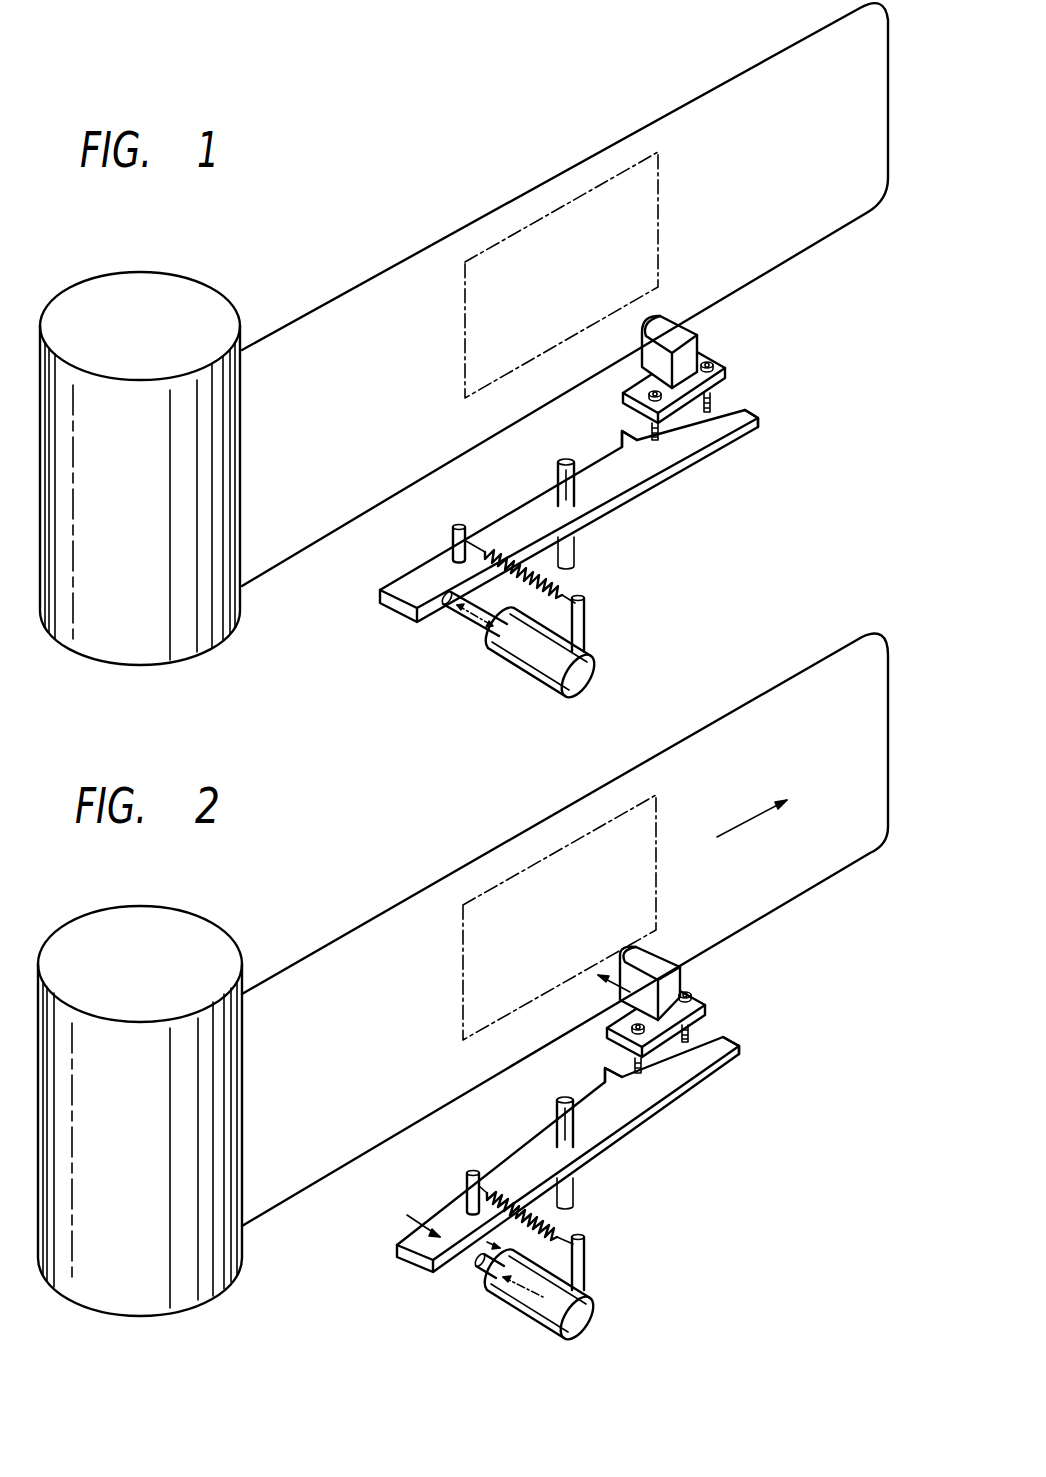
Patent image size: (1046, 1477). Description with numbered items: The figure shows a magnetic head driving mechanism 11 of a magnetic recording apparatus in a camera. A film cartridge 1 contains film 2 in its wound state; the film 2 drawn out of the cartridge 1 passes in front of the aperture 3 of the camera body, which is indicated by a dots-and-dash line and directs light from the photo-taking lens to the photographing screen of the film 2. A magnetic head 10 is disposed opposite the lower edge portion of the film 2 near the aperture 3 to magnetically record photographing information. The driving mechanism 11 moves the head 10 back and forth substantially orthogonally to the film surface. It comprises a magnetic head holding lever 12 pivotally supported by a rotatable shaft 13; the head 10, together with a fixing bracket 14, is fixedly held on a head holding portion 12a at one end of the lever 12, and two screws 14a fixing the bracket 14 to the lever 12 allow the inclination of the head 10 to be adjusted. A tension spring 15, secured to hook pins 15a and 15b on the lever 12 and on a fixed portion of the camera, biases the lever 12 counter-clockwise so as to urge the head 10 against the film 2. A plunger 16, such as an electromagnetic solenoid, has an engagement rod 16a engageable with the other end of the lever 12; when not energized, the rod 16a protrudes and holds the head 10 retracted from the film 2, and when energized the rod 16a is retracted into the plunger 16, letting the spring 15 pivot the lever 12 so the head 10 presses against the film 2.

In FIG. 1, the film cartridge 1 is at (152, 283).
In FIG. 2, the film cartridge 1 is at (160, 927).
In FIG. 1, the film 2 is at (437, 267).
In FIG. 2, the film 2 is at (372, 937).
In FIG. 1, the aperture 3 is at (640, 160).
In FIG. 2, the aperture 3 is at (575, 835).
In FIG. 1, the magnetic head 10 is at (687, 333).
In FIG. 2, the magnetic head 10 is at (652, 957).
In FIG. 1, the magnetic head driving mechanism 11 is at (722, 470).
In FIG. 1, the magnetic head holding lever 12 is at (633, 495).
In FIG. 2, the magnetic head holding lever 12 is at (668, 1100).
In FIG. 1, the head holding portion 12a is at (750, 407).
In FIG. 2, the head holding portion 12a is at (727, 1037).
In FIG. 1, the rotatable shaft 13 is at (560, 472).
In FIG. 2, the rotatable shaft 13 is at (557, 1122).
In FIG. 1, the fixing bracket 14 is at (727, 378).
In FIG. 2, the fixing bracket 14 is at (707, 1007).
In FIG. 1, the screws 14a is at (717, 363).
In FIG. 2, the screws 14a is at (693, 998).
In FIG. 1, the tension spring 15 is at (502, 548).
In FIG. 2, the tension spring 15 is at (537, 1212).
In FIG. 1, the hook pin 15a is at (455, 560).
In FIG. 2, the hook pin 15a is at (472, 1168).
In FIG. 1, the hook pin 15b is at (588, 628).
In FIG. 2, the hook pin 15b is at (587, 1268).
In FIG. 1, the plunger 16 is at (535, 668).
In FIG. 2, the plunger 16 is at (537, 1320).
In FIG. 1, the engagement rod 16a is at (467, 617).
In FIG. 2, the engagement rod 16a is at (482, 1270).